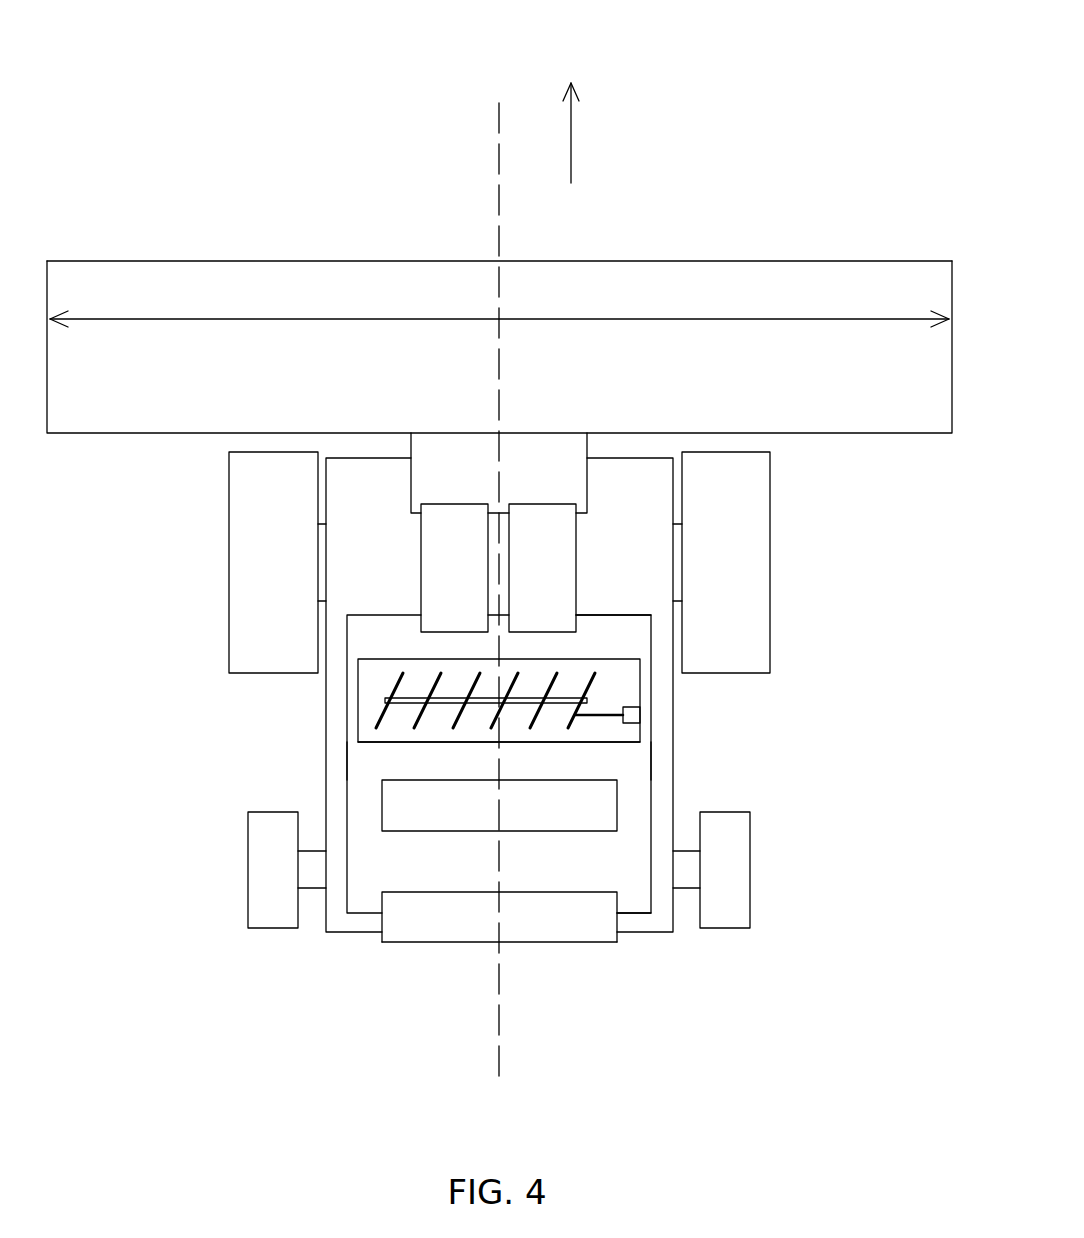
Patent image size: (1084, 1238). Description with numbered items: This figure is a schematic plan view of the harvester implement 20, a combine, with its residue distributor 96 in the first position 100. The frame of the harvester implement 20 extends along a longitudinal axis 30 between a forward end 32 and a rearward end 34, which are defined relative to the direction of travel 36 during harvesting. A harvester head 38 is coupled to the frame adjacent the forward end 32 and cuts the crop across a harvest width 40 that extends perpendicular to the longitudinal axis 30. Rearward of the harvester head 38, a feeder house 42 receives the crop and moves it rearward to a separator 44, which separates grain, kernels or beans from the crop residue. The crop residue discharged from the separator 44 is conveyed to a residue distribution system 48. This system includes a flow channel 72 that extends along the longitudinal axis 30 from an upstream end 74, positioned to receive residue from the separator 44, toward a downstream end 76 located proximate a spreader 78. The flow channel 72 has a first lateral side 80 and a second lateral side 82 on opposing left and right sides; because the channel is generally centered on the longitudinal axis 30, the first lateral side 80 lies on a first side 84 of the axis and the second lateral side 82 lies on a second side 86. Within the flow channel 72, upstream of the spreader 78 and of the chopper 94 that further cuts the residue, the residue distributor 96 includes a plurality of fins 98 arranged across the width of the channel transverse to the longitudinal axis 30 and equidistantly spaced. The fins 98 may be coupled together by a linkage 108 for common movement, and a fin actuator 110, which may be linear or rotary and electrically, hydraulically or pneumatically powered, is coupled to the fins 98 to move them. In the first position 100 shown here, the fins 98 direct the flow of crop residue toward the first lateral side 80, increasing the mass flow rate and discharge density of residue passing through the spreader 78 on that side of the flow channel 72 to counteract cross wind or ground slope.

The harvester implement 20 is at (653, 83).
The longitudinal axis 30 is at (497, 145).
The forward end 32 is at (553, 259).
The rearward end 34 is at (563, 942).
The direction of travel 36 is at (571, 157).
The harvester head 38 is at (788, 260).
The harvest width 40 is at (735, 318).
The feeder house 42 is at (548, 453).
The separator 44 is at (557, 560).
The residue distribution system 48 is at (660, 777).
The flow channel 72 is at (562, 646).
The upstream end 74 is at (614, 612).
The downstream end 76 is at (635, 915).
The spreader 78 is at (438, 942).
The first lateral side 80 is at (380, 764).
The second lateral side 82 is at (615, 760).
The first side 84 is at (407, 1053).
The second side 86 is at (563, 1053).
The chopper 94 is at (625, 800).
The residue distributor 96 is at (642, 664).
The fin 98 is at (595, 687).
The first position 100 is at (377, 721).
The linkage 108 is at (437, 703).
The fin actuator 110 is at (640, 713).